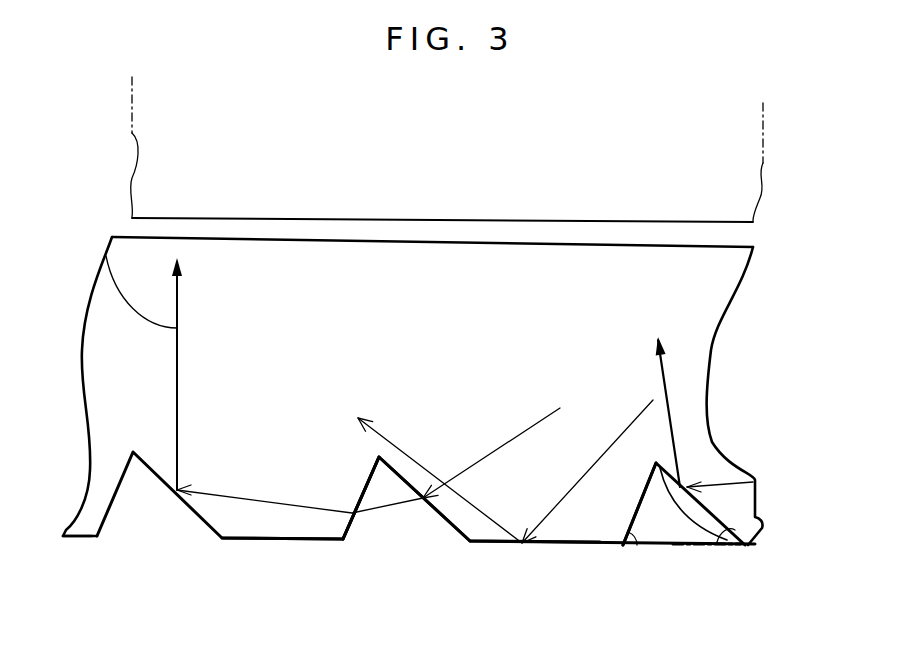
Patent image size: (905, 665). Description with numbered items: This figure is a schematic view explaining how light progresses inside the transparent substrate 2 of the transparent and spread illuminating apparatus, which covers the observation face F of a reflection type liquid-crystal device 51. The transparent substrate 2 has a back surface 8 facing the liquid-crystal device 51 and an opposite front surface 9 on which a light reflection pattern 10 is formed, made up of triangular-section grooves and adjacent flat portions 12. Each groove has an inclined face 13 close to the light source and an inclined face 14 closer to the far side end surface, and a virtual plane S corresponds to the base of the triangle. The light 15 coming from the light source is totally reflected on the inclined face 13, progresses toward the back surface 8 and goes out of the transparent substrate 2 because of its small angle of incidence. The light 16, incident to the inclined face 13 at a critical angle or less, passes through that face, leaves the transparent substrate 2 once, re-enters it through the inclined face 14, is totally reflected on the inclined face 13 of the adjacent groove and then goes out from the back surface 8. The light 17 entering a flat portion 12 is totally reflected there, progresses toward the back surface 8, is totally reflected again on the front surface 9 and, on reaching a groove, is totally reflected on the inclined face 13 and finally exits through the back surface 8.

The transparent substrate 2 is at (410, 272).
The back surface 8 is at (638, 250).
The front surface 9 is at (90, 535).
The light reflection pattern 10 is at (295, 541).
The flat portion 12 is at (513, 545).
The inclined face 13 is at (440, 524).
The inclined face 14 is at (368, 480).
The light 15 is at (668, 383).
The light 16 is at (106, 256).
The light 17 is at (630, 422).
The reflection type liquid-crystal device 51 is at (768, 156).
The observation face F is at (173, 217).
The virtual plane S is at (680, 548).